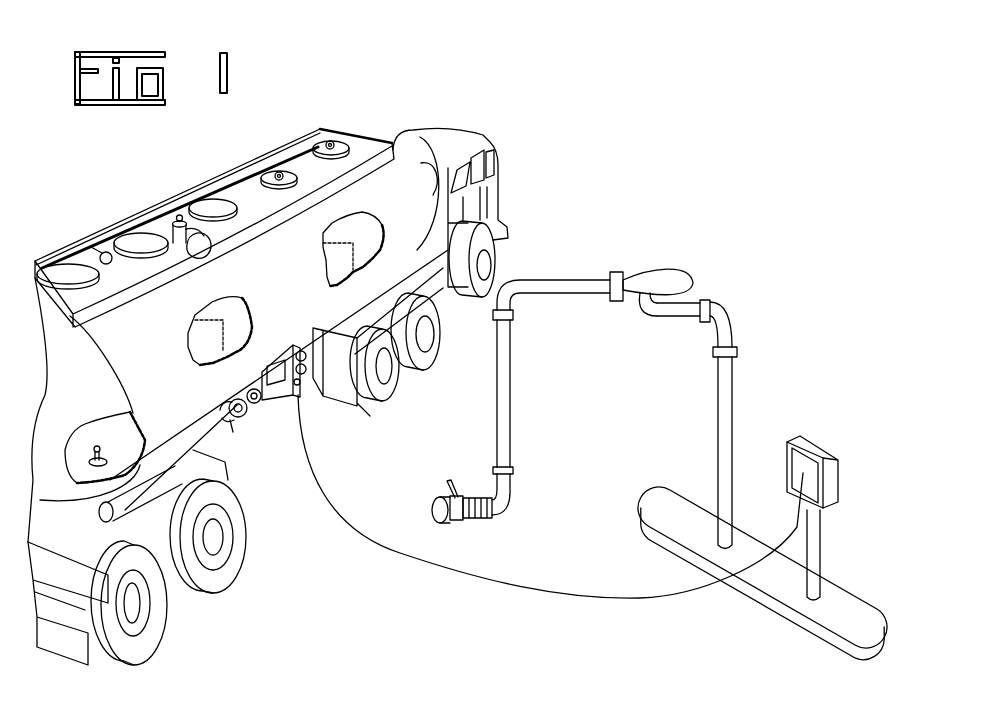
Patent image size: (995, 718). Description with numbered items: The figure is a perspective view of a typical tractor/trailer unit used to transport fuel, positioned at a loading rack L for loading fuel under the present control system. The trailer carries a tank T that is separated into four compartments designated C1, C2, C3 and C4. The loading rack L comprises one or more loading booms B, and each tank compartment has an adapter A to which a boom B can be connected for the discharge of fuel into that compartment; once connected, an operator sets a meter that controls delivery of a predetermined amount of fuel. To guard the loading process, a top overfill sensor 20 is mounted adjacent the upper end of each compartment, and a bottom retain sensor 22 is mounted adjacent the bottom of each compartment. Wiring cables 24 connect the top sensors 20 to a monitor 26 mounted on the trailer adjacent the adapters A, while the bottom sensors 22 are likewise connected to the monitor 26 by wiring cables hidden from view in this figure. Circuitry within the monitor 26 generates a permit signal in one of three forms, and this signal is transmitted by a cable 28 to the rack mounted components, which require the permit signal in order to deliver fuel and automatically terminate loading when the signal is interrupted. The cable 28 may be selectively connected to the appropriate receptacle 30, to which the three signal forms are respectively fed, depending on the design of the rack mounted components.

The tank T is at (420, 160).
The top overfill sensor 20 is at (106, 251).
The wiring cables 24 is at (234, 178).
The bottom retain sensor 22 is at (103, 438).
The compartment C1 is at (357, 228).
The compartment C2 is at (333, 266).
The compartment C3 is at (220, 315).
The compartment C4 is at (203, 346).
The receptacle 30 is at (311, 338).
The monitor 26 is at (278, 398).
The adapter A is at (230, 425).
The loading boom B is at (510, 425).
The loading rack L is at (752, 292).
The cable 28 is at (797, 527).